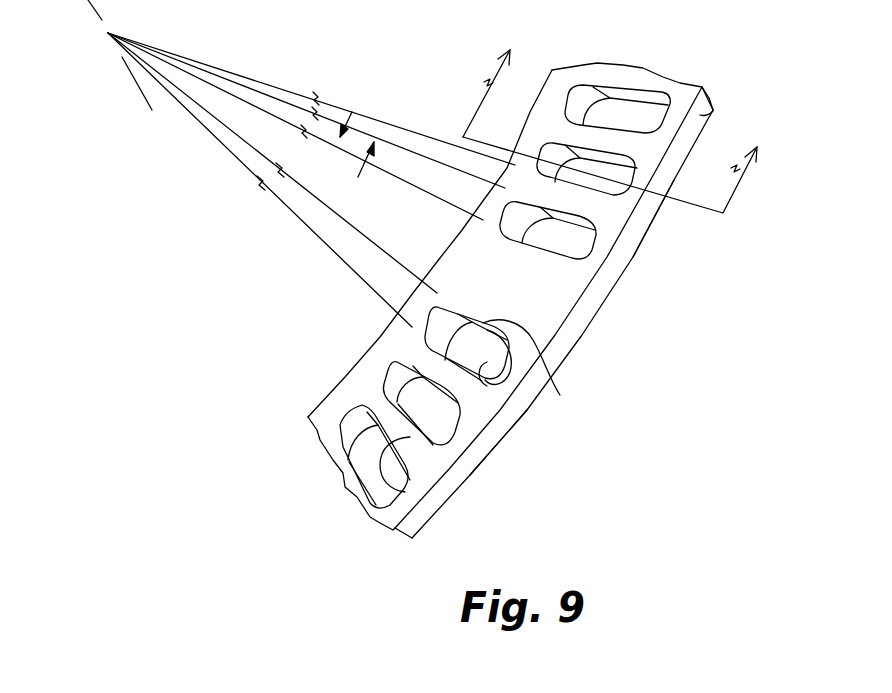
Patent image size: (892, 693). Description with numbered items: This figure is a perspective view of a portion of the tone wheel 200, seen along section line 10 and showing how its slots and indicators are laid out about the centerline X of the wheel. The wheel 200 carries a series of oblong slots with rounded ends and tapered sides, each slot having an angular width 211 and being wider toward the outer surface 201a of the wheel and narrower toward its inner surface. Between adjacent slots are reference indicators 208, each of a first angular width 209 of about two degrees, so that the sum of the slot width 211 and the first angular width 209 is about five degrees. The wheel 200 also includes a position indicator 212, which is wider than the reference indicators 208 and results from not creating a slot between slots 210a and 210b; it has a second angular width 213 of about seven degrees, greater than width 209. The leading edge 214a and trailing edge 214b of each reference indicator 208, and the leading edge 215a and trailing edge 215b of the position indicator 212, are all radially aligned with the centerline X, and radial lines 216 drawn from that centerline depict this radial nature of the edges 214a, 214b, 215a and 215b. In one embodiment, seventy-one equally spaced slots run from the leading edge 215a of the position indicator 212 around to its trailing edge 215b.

The centerline X is at (100, 12).
The section line 10- 10 is at (625, 114).
The wheel 200 is at (616, 290).
The outer surface 201a is at (711, 106).
The reference indicator 208 is at (405, 435).
The first angular width 209 is at (387, 125).
The slot 210a is at (637, 225).
The slot 210b is at (488, 384).
The angular width 211 is at (338, 257).
The position indicator 212 is at (594, 403).
The second angular width 213 is at (307, 193).
The leading edge 214a is at (442, 547).
The trailing edge 214b is at (413, 417).
The leading edge 215a is at (478, 374).
The trailing edge 215b is at (613, 268).
The radial line 216 is at (280, 199).